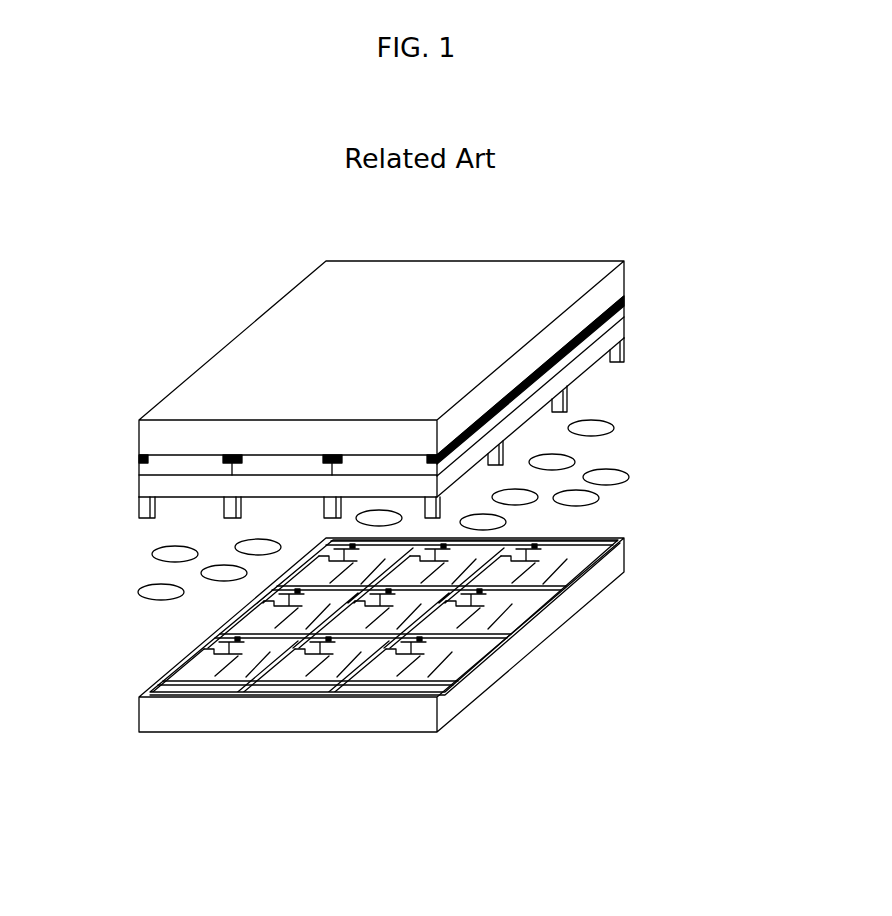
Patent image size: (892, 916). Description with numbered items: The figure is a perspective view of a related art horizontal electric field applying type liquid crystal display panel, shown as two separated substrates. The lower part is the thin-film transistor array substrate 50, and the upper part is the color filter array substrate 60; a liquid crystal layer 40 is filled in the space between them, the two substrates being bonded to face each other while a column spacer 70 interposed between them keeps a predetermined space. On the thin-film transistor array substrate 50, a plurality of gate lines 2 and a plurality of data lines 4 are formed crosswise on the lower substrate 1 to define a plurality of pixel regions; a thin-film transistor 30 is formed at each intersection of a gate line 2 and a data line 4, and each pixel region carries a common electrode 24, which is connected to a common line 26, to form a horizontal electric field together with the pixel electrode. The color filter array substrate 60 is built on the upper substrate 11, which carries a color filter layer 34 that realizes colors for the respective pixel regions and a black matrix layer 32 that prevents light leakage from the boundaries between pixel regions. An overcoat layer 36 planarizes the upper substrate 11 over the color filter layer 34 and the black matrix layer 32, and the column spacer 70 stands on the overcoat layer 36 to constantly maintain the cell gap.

The color filter array substrate 60 is at (411, 364).
The upper substrate 11 is at (618, 283).
The color filter layer 34 is at (620, 310).
The overcoat layer 36 is at (622, 333).
The column spacer 70 is at (622, 355).
The black matrix layer 32 is at (139, 459).
The liquid crystal layer 40 is at (607, 430).
The thin-film transistor array substrate 50 is at (418, 682).
The lower substrate 1 is at (615, 569).
The gate line 2 is at (598, 538).
The common line 26 is at (534, 588).
The common electrode 24 is at (354, 622).
The thin-film transistor 30 is at (409, 652).
The data line 4 is at (183, 677).